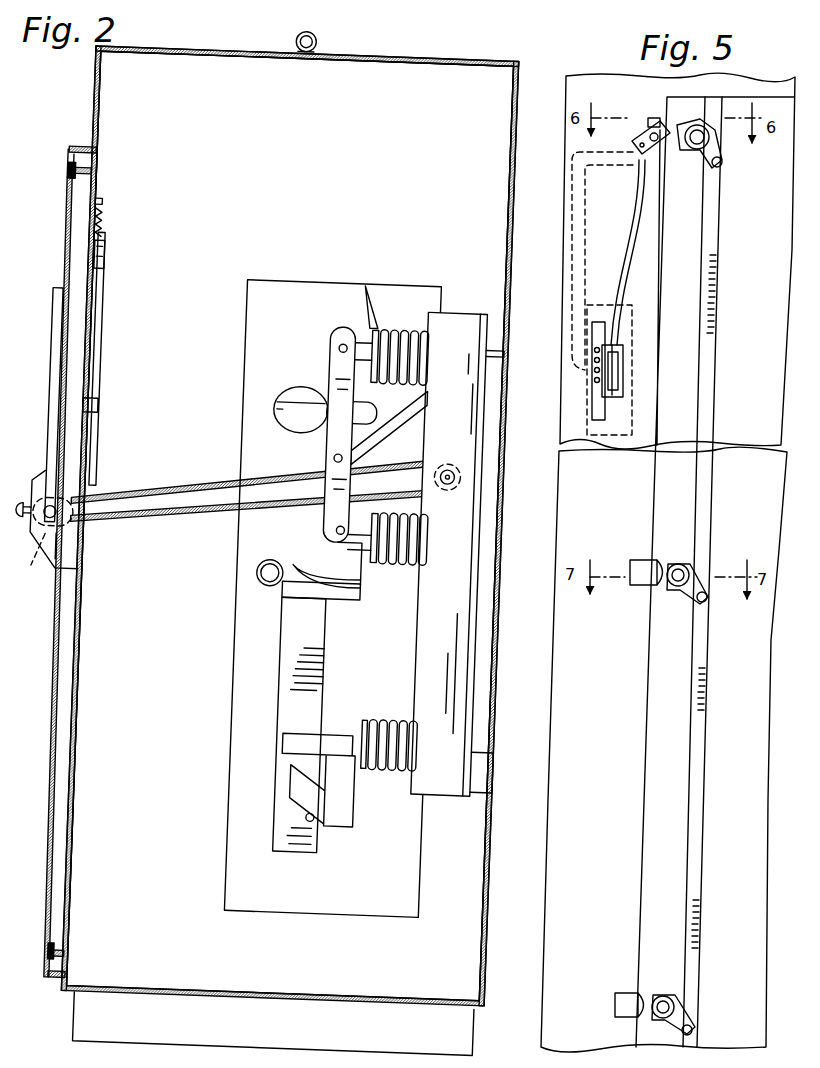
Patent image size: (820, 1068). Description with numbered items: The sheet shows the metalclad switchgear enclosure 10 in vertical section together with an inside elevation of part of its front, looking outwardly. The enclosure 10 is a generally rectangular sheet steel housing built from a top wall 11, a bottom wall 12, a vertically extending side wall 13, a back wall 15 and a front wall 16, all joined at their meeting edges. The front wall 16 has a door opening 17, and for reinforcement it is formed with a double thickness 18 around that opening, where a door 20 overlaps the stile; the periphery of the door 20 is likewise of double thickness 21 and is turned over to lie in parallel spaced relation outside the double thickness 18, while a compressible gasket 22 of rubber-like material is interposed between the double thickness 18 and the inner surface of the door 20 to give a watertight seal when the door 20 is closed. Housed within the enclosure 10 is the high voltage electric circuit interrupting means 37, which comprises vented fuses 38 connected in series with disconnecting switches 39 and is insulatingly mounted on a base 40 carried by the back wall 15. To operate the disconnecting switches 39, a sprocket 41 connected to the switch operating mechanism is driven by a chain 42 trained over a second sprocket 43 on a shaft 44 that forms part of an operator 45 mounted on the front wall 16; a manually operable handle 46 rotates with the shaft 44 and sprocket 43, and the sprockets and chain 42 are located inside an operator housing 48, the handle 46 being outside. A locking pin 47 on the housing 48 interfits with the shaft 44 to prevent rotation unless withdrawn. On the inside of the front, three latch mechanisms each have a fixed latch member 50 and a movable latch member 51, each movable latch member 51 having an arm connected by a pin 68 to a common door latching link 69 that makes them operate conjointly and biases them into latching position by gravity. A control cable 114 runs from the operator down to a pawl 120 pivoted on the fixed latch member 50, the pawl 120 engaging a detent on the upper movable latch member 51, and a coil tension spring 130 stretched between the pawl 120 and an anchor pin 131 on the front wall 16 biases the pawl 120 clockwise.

In FIG. 2, the enclosure 10 is at (470, 54).
In FIG. 2, the top wall 11 is at (388, 62).
In FIG. 2, the bottom wall 12 is at (288, 998).
In FIG. 2, the side wall 13 is at (300, 191).
In FIG. 2, the back wall 15 is at (518, 200).
In FIG. 2, the front wall 16 is at (100, 97).
In FIG. 5, the front wall 16 is at (767, 87).
In FIG. 2, the door opening 17 is at (93, 188).
In FIG. 2, the double thickness 18 is at (80, 178).
In FIG. 2, the door 20 is at (50, 737).
In FIG. 5, the door 20 is at (770, 303).
In FIG. 2, the double thickness periphery of the door 21 is at (82, 145).
In FIG. 2, the compressible gasket 22 is at (72, 165).
In FIG. 2, the high voltage electric circuit interrupting means 37 is at (389, 246).
In FIG. 2, the vented fuse 38 is at (230, 640).
In FIG. 2, the disconnecting switch 39 is at (256, 430).
In FIG. 2, the base 40 is at (461, 303).
In FIG. 2, the sprocket 41 is at (447, 463).
In FIG. 2, the chain 42 is at (204, 482).
In FIG. 2, the sprocket 43 is at (83, 530).
In FIG. 5, the sprocket 43 is at (592, 375).
In FIG. 2, the shaft 44 is at (45, 540).
In FIG. 2, the operator 45 is at (35, 468).
In FIG. 5, the operator 45 is at (632, 299).
In FIG. 2, the manually operable handle 46 is at (57, 355).
In FIG. 5, the manually operable handle 46 is at (583, 226).
In FIG. 2, the locking pin 47 is at (24, 520).
In FIG. 2, the operator housing 48 is at (62, 540).
In FIG. 5, the fixed latch member 50 is at (657, 112).
In FIG. 5, the movable latch member 51 is at (704, 121).
In FIG. 5, the pin 68 is at (722, 162).
In FIG. 5, the door latching link 69 is at (712, 377).
In FIG. 2, the control cable 114 is at (112, 357).
In FIG. 5, the control cable 114 is at (620, 243).
In FIG. 2, the pawl 120 is at (102, 257).
In FIG. 5, the pawl 120 is at (634, 131).
In FIG. 2, the coil tension spring 130 is at (98, 232).
In FIG. 2, the anchor pin 131 is at (98, 218).